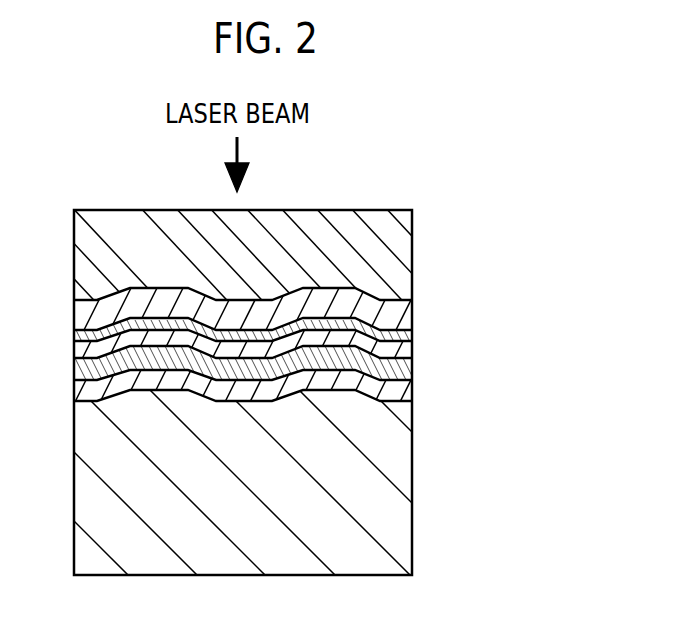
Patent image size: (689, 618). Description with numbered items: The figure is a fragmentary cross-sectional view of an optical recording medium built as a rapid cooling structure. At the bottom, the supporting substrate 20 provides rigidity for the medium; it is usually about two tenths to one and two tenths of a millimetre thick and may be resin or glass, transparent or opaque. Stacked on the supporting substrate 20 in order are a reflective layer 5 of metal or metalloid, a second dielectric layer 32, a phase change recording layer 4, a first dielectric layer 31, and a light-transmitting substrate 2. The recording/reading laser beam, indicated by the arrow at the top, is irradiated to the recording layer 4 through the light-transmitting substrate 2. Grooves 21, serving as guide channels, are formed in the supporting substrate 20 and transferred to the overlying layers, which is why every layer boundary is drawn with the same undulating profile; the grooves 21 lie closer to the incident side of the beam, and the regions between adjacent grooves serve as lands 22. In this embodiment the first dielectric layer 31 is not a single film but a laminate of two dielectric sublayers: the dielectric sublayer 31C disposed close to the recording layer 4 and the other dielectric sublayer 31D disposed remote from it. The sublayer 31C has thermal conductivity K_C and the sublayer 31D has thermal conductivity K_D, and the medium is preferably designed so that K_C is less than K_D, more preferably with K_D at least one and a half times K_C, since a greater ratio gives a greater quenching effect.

The light-transmitting substrate 2 is at (262, 250).
The grooves 21 is at (129, 210).
The lands 22 is at (196, 220).
The first dielectric layer 31 is at (343, 287).
The dielectric sublayer 31D is at (313, 287).
The dielectric sublayer 31C is at (311, 304).
The phase change recording layer 4 is at (297, 336).
The second dielectric layer 32 is at (301, 361).
The reflective layer 5 is at (293, 385).
The supporting substrate 20 is at (280, 480).